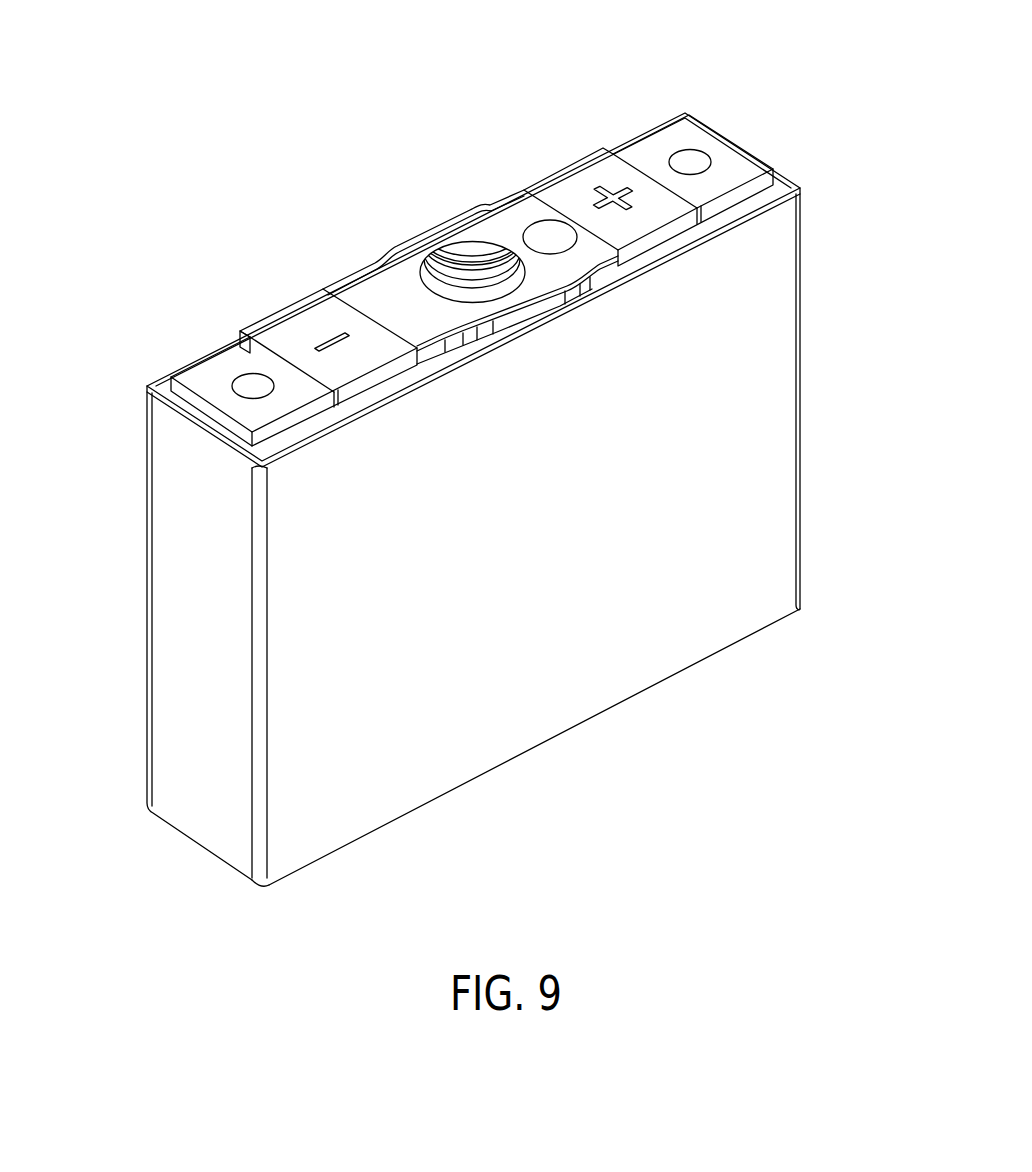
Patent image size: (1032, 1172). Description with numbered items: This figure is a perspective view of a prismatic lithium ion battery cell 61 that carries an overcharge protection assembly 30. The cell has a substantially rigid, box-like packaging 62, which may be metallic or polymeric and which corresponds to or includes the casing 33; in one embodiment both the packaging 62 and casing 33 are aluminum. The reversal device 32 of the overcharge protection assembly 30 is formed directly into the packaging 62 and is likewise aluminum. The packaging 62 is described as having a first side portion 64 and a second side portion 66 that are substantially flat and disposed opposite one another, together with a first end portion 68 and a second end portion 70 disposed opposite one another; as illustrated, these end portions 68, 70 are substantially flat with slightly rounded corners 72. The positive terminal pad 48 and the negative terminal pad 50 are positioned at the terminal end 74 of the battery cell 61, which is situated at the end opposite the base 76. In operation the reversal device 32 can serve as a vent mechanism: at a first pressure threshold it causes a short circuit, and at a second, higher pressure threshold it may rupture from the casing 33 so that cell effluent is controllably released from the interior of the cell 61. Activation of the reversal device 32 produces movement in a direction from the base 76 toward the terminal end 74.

The battery cell 61 is at (473, 458).
The overcharge protection assembly 30 is at (511, 247).
The reversal device 32 is at (475, 295).
The casing 33 is at (779, 186).
The positive terminal pad 48 is at (578, 173).
The negative terminal pad 50 is at (303, 326).
The terminal end 74 is at (154, 355).
The second end portion 70 is at (815, 266).
The packaging 62 is at (590, 536).
The first side portion 64 is at (699, 621).
The base 76 is at (559, 747).
The second side portion 66 is at (124, 469).
The first end portion 68 is at (186, 688).
The rounded corners 72 is at (261, 823).